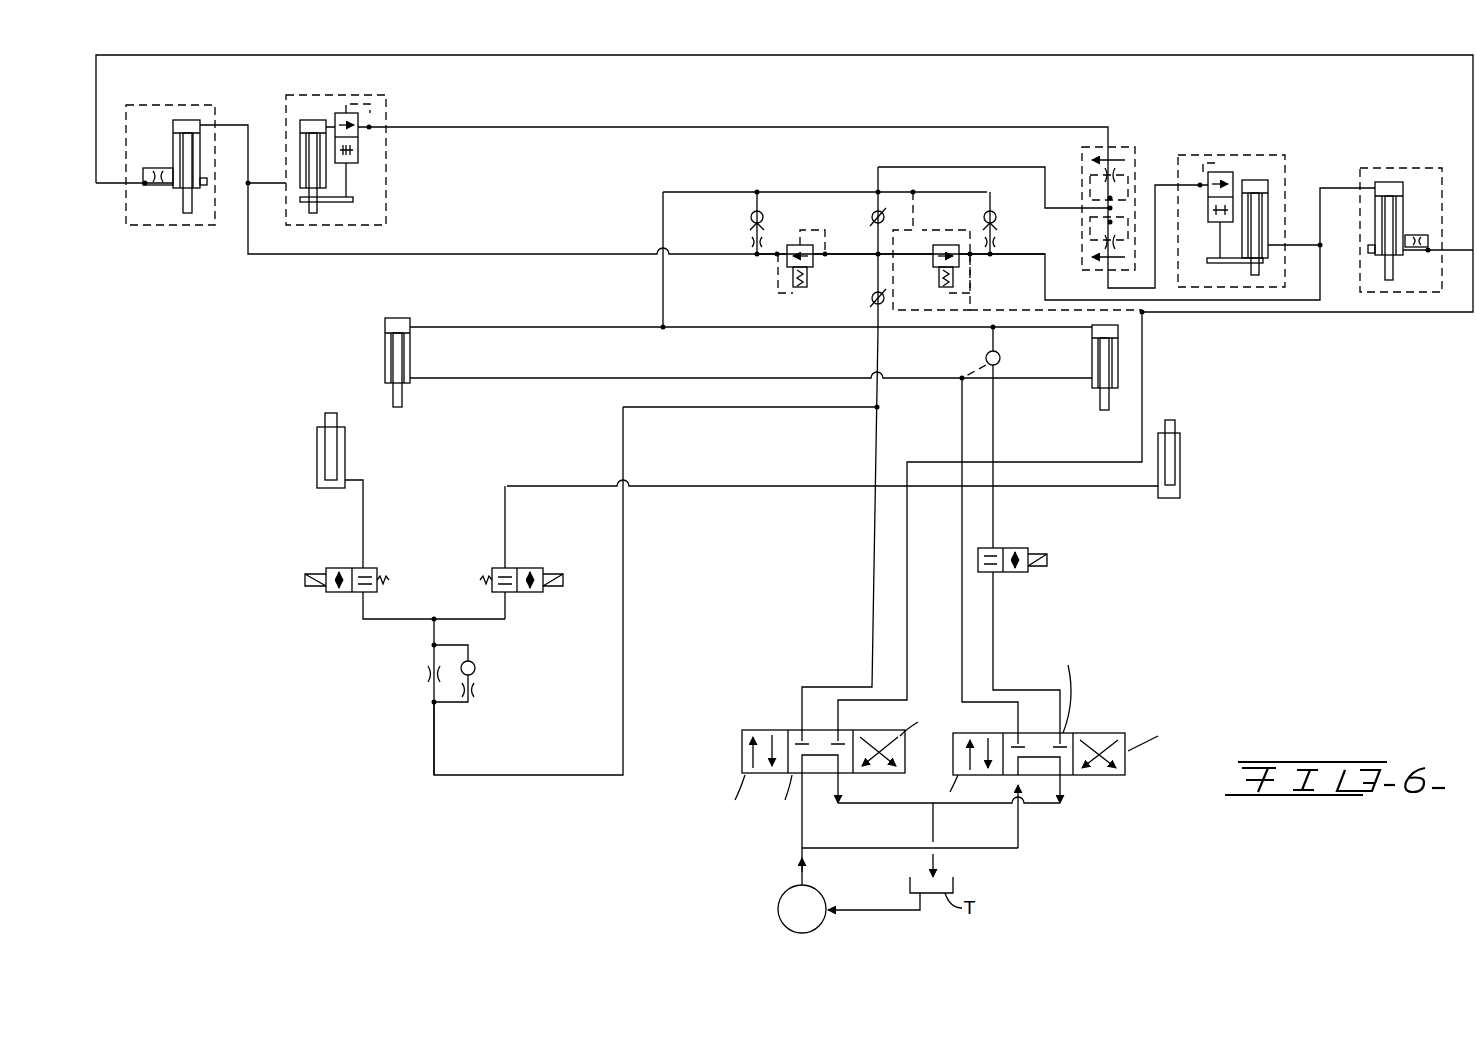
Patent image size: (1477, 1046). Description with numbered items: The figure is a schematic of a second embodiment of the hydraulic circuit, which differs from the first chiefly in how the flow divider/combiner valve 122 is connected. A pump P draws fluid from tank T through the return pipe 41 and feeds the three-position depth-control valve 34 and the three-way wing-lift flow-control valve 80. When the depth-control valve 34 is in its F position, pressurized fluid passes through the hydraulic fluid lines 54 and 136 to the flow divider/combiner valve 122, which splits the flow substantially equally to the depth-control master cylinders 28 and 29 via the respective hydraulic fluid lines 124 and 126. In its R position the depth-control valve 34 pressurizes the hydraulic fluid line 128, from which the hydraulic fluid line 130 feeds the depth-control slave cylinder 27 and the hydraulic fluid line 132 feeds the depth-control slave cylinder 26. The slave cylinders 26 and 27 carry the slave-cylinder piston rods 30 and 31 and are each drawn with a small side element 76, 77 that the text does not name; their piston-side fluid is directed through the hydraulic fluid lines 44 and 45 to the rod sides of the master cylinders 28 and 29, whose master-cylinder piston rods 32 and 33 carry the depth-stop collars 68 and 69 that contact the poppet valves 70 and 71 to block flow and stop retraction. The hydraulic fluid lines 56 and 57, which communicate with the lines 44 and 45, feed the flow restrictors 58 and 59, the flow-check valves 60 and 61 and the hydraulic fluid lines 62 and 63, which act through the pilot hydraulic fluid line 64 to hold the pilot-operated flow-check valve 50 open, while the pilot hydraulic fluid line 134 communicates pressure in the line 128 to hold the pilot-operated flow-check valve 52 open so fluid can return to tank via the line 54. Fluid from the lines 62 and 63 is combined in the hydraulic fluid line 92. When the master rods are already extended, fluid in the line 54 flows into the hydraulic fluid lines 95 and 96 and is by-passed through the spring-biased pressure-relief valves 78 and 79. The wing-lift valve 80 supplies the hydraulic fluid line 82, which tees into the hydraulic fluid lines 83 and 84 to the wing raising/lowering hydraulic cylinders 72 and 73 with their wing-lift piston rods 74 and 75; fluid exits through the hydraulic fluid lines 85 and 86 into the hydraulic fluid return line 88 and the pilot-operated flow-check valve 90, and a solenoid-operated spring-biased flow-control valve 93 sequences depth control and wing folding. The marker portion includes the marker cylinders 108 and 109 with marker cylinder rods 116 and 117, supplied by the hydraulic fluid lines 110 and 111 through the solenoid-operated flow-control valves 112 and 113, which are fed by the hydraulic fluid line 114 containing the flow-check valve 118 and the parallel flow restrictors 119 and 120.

The depth-control slave cylinder 26 is at (150, 226).
The depth-control slave cylinder 27 is at (1380, 168).
The depth-control master cylinder 28 is at (358, 96).
The depth-control master cylinder 29 is at (1258, 155).
The slave-cylinder piston rod 30 is at (188, 214).
The slave-cylinder piston rod 31 is at (1395, 275).
The master-cylinder piston rod 32 is at (314, 214).
The master-cylinder piston rod 33 is at (1259, 276).
The depth-control valve 34 is at (777, 720).
The return pipe 41 is at (878, 910).
The hydraulic fluid line 44 is at (226, 125).
The hydraulic fluid line 45 is at (1338, 188).
The pilot-operated flow-check valve 50 is at (872, 218).
The pilot-operated flow-check valve 52 is at (872, 302).
The hydraulic fluid line 54 is at (872, 572).
The hydraulic fluid line 56 is at (547, 254).
The hydraulic fluid line 57 is at (1020, 254).
The flow restrictor 58 is at (750, 241).
The flow restrictor 59 is at (998, 226).
The flow-check valve 60 is at (763, 217).
The flow-check valve 61 is at (996, 210).
The hydraulic fluid line 62 is at (750, 199).
The hydraulic fluid line 63 is at (925, 192).
The pilot hydraulic fluid line 64 is at (920, 250).
The depth-stop collar 68 is at (328, 200).
The depth-stop collar 69 is at (1226, 263).
The poppet valve 70 is at (356, 150).
The poppet valve 71 is at (1208, 190).
The wing raising/lowering hydraulic cylinder 72 is at (385, 355).
The wing raising/lowering hydraulic cylinder 73 is at (1092, 360).
The wing-lift piston rod 74 is at (402, 358).
The wing-lift piston rod 75 is at (1118, 368).
The stop 76 is at (207, 184).
The stop 77 is at (1368, 252).
The spring-biased pressure-relief valve 78 is at (800, 268).
The spring-biased pressure-relief valve 79 is at (933, 265).
The wing-lift flow-control valve 80 is at (1095, 706).
The hydraulic fluid line 82 is at (960, 580).
The hydraulic fluid line 83 is at (650, 378).
The hydraulic fluid line 84 is at (1033, 378).
The hydraulic fluid line 85 is at (557, 327).
The hydraulic fluid line 86 is at (1042, 330).
The hydraulic fluid return line 88 is at (990, 333).
The pilot-operated flow-check valve 90 is at (996, 355).
The hydraulic fluid line 92 is at (663, 288).
The solenoid-operated spring-biased flow-control valve 93 is at (1012, 542).
The hydraulic fluid line 95 is at (854, 254).
The hydraulic fluid line 96 is at (940, 255).
The marker cylinder 108 is at (317, 462).
The marker cylinder 109 is at (1180, 488).
The hydraulic fluid line 110 is at (365, 505).
The hydraulic fluid line 111 is at (505, 500).
The solenoid-operated flow-control valve 112 is at (340, 600).
The solenoid-operated flow-control valve 113 is at (526, 600).
The hydraulic fluid line 114 is at (434, 625).
The marker cylinder rod 116 is at (329, 413).
The marker cylinder rod 117 is at (1172, 421).
The flow-check valve 118 is at (476, 668).
The flow restrictor 119 is at (422, 677).
The flow restrictor 120 is at (480, 694).
The flow divider/combiner valve 122 is at (1135, 147).
The hydraulic fluid line 124 is at (636, 127).
The hydraulic fluid line 126 is at (1160, 185).
The hydraulic fluid line 128 is at (1432, 312).
The hydraulic fluid line 130 is at (1455, 243).
The hydraulic fluid line 132 is at (152, 55).
The pilot hydraulic fluid line 134 is at (985, 310).
The hydraulic fluid line 136 is at (975, 167).